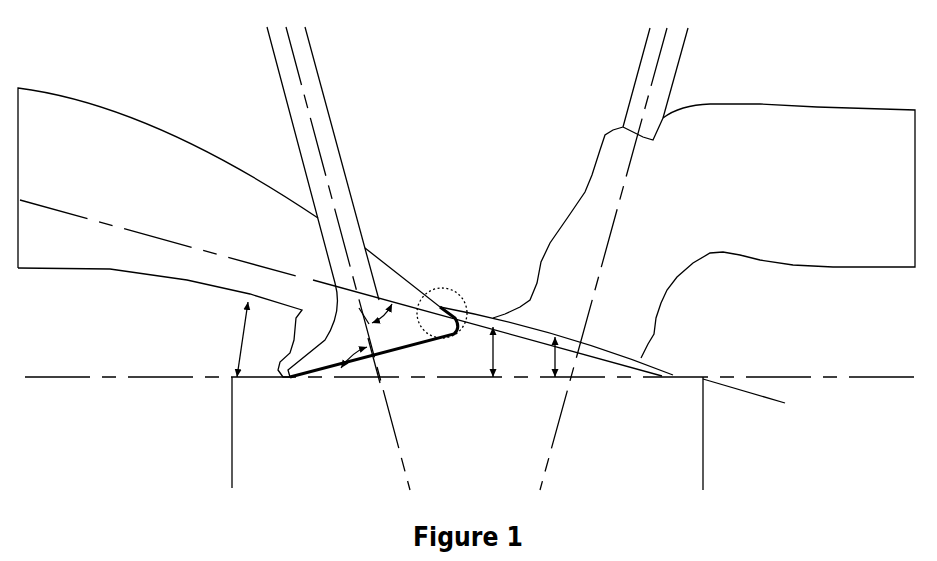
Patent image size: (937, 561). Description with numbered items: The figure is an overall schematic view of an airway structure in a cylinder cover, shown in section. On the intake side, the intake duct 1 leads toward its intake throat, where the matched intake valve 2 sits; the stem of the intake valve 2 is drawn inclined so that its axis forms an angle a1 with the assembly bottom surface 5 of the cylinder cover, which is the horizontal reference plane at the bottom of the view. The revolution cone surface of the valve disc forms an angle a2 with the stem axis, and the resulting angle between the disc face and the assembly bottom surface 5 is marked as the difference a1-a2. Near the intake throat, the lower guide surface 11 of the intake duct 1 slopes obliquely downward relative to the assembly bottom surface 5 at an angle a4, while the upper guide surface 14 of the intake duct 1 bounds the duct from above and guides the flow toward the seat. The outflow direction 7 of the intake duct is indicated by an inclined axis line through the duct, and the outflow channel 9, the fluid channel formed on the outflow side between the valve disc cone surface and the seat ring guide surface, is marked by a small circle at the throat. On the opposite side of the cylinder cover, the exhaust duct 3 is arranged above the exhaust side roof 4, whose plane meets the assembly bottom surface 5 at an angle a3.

The intake duct 1 is at (133, 118).
The intake valve 2 is at (318, 115).
The exhaust duct 3 is at (783, 133).
The exhaust side roof 4 is at (673, 375).
The assembly bottom surface 5 is at (820, 380).
The outflow direction of intake duct 7 is at (200, 250).
The outflow channel 9 is at (463, 302).
The lower guide surface 11 is at (248, 302).
The upper guide surface 14 is at (405, 282).
The inclination angle of intake valve stem axis a1 is at (352, 358).
The angle between valve disc cone surface and stem axis a2 is at (379, 322).
The angle between exhaust side roof plane and assembly bottom surface a3 is at (539, 357).
The angle between lower guide surface and assembly bottom surface a4 is at (220, 333).
The difference between angles a1 and a2 a1-a2 is at (459, 352).